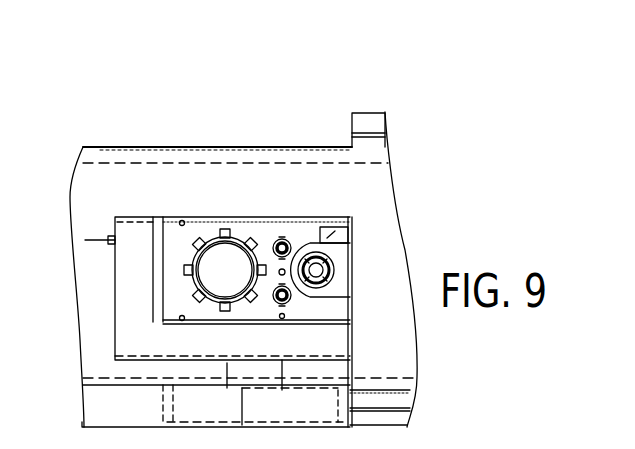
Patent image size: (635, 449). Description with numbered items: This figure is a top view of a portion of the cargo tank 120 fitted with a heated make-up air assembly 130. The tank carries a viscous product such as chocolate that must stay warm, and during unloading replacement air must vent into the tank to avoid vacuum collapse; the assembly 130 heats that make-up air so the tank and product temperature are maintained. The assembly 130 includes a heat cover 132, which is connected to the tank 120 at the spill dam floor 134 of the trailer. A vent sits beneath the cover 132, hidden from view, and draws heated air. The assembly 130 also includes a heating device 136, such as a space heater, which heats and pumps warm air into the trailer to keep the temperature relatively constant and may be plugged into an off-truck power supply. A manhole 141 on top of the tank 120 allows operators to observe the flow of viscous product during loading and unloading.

The cargo tank 120 is at (437, 127).
The heated make-up air assembly 130 is at (337, 264).
The heat cover 132 is at (345, 284).
The spill dam floor 134 is at (291, 243).
The heating device 136 is at (348, 222).
The manhole 141 is at (225, 270).